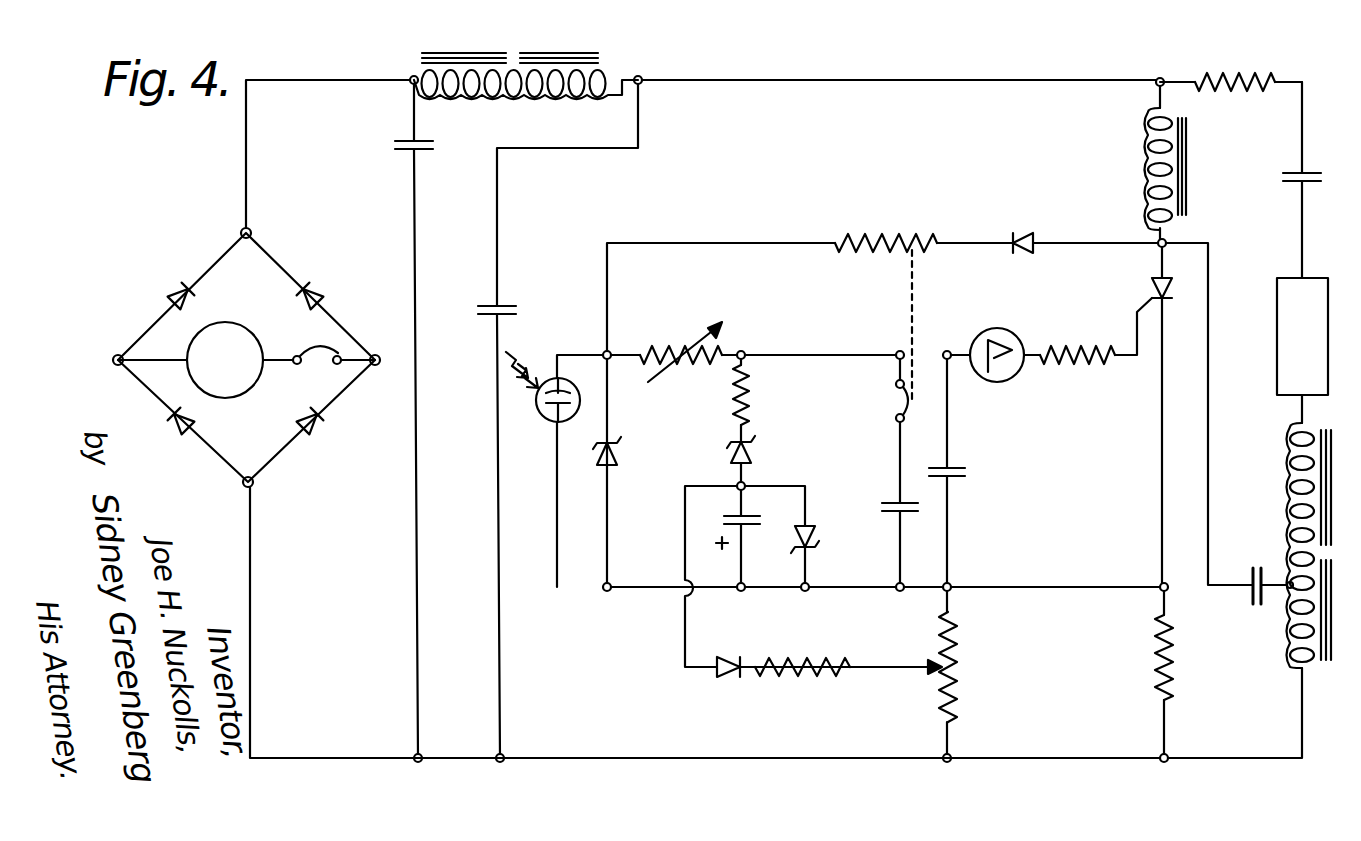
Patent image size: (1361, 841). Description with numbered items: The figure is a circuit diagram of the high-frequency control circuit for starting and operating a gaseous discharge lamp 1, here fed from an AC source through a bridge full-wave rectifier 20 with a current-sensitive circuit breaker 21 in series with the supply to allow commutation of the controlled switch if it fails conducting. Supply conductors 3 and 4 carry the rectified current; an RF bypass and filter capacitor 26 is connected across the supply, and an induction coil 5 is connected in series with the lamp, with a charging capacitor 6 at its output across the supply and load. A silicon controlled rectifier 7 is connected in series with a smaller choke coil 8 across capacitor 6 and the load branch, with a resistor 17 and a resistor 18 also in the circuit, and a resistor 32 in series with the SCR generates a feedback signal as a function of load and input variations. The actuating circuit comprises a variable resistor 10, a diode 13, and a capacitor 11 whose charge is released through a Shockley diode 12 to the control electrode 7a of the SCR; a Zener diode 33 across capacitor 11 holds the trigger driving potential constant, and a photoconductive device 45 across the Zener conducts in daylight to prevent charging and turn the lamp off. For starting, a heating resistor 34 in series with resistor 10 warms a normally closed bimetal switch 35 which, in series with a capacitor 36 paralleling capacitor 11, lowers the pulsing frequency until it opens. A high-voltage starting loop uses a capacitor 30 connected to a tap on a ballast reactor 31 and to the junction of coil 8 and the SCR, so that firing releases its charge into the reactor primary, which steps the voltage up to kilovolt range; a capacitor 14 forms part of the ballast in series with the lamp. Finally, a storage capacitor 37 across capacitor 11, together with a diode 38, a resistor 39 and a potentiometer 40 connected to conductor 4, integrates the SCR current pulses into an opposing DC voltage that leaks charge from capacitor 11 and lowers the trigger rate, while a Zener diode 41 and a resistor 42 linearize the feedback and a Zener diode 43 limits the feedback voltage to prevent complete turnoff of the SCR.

The lamp 1 is at (1277, 347).
The supply conductor 3 is at (690, 78).
The supply conductor 4 is at (533, 757).
The induction coil 5 is at (512, 62).
The charging capacitor 6 is at (475, 310).
The silicon controlled rectifier 7 is at (1172, 294).
The control electrode 7a is at (1137, 312).
The choke coil 8 is at (1190, 166).
The variable resistor 10 is at (677, 346).
The capacitor 11 is at (965, 472).
The Shockley diode 12 is at (994, 328).
The diode 13 is at (1030, 240).
The capacitor 14 is at (1287, 188).
The resistor 17 is at (1240, 80).
The resistor 18 is at (1080, 376).
The bridge full-wave rectifier 20 is at (282, 436).
The current-sensitive circuit breaker 21 is at (318, 345).
The RF bypass and filter capacitor 26 is at (405, 160).
The capacitor 30 is at (1256, 612).
The ballast reactor 31 is at (1289, 540).
The resistor 32 is at (1152, 662).
The Zener diode 33 is at (618, 445).
The heating resistor 34 is at (886, 232).
The bimetal heat-responsive switch 35 is at (894, 402).
The capacitor 36 is at (890, 502).
The storage capacitor 37 is at (732, 523).
The diode 38 is at (724, 680).
The resistor 39 is at (814, 680).
The potentiometer 40 is at (962, 669).
The Zener diode 41 is at (760, 456).
The resistor 42 is at (752, 392).
The Zener diode 43 is at (818, 540).
The photoconductive device 45 is at (542, 425).